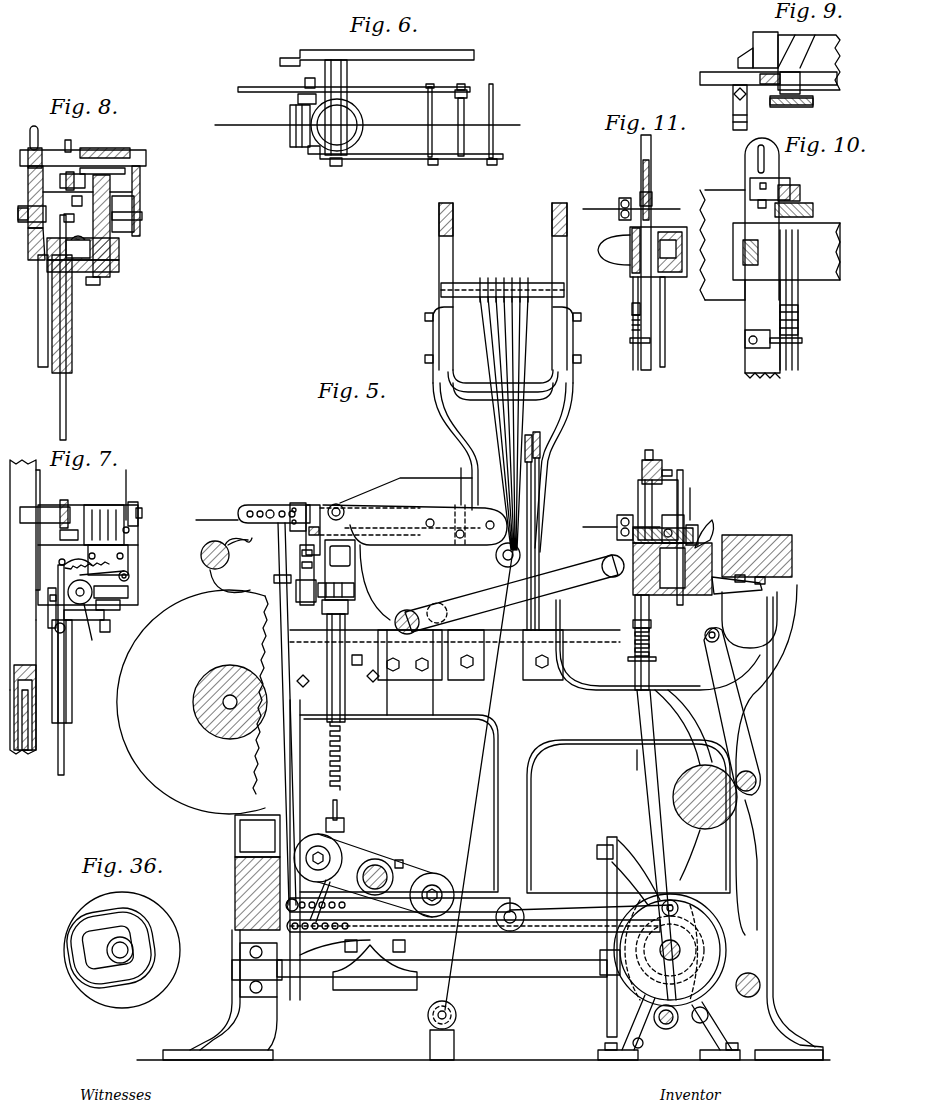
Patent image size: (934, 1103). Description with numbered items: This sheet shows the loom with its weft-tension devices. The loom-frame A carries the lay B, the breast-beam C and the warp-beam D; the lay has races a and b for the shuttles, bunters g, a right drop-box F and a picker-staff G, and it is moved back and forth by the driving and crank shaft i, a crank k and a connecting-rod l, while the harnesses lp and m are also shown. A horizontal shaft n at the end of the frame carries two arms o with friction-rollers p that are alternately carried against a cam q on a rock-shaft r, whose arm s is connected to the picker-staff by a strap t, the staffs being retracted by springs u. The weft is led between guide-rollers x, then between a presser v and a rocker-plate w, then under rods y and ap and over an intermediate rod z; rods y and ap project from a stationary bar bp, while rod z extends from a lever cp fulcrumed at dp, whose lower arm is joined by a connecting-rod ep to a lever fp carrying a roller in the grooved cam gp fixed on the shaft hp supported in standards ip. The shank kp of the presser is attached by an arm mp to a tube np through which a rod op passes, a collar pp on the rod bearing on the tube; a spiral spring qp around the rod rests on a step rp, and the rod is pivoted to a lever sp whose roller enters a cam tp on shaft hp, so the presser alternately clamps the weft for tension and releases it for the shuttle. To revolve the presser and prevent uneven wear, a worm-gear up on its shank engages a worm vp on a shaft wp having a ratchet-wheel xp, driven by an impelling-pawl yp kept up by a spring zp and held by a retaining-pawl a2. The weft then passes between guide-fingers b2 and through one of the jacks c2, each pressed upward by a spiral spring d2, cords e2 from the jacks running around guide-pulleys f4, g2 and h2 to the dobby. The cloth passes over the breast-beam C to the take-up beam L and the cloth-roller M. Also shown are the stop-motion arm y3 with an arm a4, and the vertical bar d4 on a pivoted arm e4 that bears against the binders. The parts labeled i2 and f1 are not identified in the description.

In FIG. 5, the loom-frame A is at (533, 796).
In FIG. 5, the lay B is at (672, 561).
In FIG. 5, the breast-beam C is at (757, 556).
In FIG. 5, the warp-beam D is at (192, 702).
In FIG. 5, the drop-box F is at (687, 536).
In FIG. 5, the picker-staff G is at (628, 769).
In FIG. 5, the cloth-take-up beam L is at (705, 797).
In FIG. 5, the cloth-roller M is at (758, 781).
In FIG. 5, the race a is at (487, 518).
In FIG. 5, the race b is at (415, 520).
In FIG. 5, the bunter g is at (671, 916).
In FIG. 5, the driving and crank shaft i is at (407, 605).
In FIG. 5, the crank k is at (437, 603).
In FIG. 5, the connecting-rod l is at (514, 593).
In FIG. 5, the harness m is at (348, 612).
In FIG. 5, the horizontal shaft n is at (375, 765).
In FIG. 5, the arm o is at (399, 876).
In FIG. 5, the friction-roller p is at (489, 701).
In FIG. 5, the cam q is at (375, 965).
In FIG. 5, the rock-shaft r is at (442, 969).
In FIG. 5, the arm s is at (605, 937).
In FIG. 5, the strap t is at (636, 872).
In FIG. 5, the spring u is at (644, 1043).
In FIG. 8, the presser v is at (142, 178).
In FIG. 7, the presser v is at (130, 528).
In FIG. 5, the presser v is at (318, 500).
In FIG. 8, the rocker-plate w is at (83, 153).
In FIG. 6, the rocker-plate w is at (336, 107).
In FIG. 7, the rocker-plate w is at (104, 515).
In FIG. 5, the rocker-plate w is at (345, 505).
In FIG. 6, the guide-rollers x is at (294, 126).
In FIG. 5, the guide-rollers x is at (300, 500).
In FIG. 6, the rod y is at (423, 120).
In FIG. 5, the rod y is at (433, 527).
In FIG. 8, the rod z is at (76, 200).
In FIG. 6, the rod z is at (455, 120).
In FIG. 5, the rod z is at (455, 514).
In FIG. 6, the rod ap is at (498, 121).
In FIG. 5, the rod ap is at (375, 582).
In FIG. 8, the stationary bar bp is at (142, 198).
In FIG. 6, the stationary bar bp is at (411, 162).
In FIG. 7, the stationary bar bp is at (140, 545).
In FIG. 8, the lever cp is at (72, 152).
In FIG. 6, the lever cp is at (354, 81).
In FIG. 7, the lever cp is at (49, 504).
In FIG. 5, the lever cp is at (253, 505).
In FIG. 8, the fulcrum dp is at (55, 155).
In FIG. 6, the fulcrum dp is at (335, 167).
In FIG. 7, the fulcrum dp is at (140, 512).
In FIG. 5, the fulcrum dp is at (337, 504).
In FIG. 5, the connecting-rod ep is at (291, 714).
In FIG. 5, the lever fp is at (398, 899).
In FIG. 36, the grooved cam gp is at (112, 947).
In FIG. 5, the grooved cam gp is at (705, 920).
In FIG. 5, the horizontal shaft hp is at (678, 949).
In FIG. 5, the standard ip is at (705, 1020).
In FIG. 8, the shank kp is at (122, 222).
In FIG. 7, the shank kp is at (120, 606).
In FIG. 5, the harness lp is at (503, 416).
In FIG. 8, the arm mp is at (118, 264).
In FIG. 7, the arm mp is at (110, 620).
In FIG. 8, the tube np is at (70, 314).
In FIG. 7, the tube np is at (70, 671).
In FIG. 8, the rod op is at (70, 327).
In FIG. 7, the rod op is at (66, 670).
In FIG. 5, the rod op is at (340, 778).
In FIG. 8, the collar pp is at (40, 265).
In FIG. 7, the collar pp is at (48, 600).
In FIG. 5, the spiral spring qp is at (344, 756).
In FIG. 5, the step rp is at (335, 825).
In FIG. 5, the lever sp is at (473, 917).
In FIG. 5, the cam tp is at (659, 950).
In FIG. 8, the worm-gear up is at (112, 245).
In FIG. 7, the worm-gear up is at (124, 593).
In FIG. 5, the worm-gear up is at (354, 588).
In FIG. 6, the worm vp is at (339, 125).
In FIG. 8, the shaft wp is at (90, 282).
In FIG. 7, the shaft wp is at (92, 640).
In FIG. 6, the ratchet-wheel xp is at (298, 98).
In FIG. 5, the ratchet-wheel xp is at (296, 600).
In FIG. 6, the impelling-pawl yp is at (305, 76).
In FIG. 7, the impelling-pawl yp is at (58, 568).
In FIG. 7, the spring zp is at (78, 555).
In FIG. 6, the retaining-pawl a2 is at (310, 155).
In FIG. 7, the retaining-pawl a2 is at (130, 580).
In FIG. 5, the retaining-pawl a2 is at (300, 575).
In FIG. 9, the guide-fingers b2 is at (800, 103).
In FIG. 11, the guide-fingers b2 is at (619, 205).
In FIG. 10, the guide-fingers b2 is at (804, 208).
In FIG. 5, the guide-fingers b2 is at (618, 520).
In FIG. 9, the jack c2 is at (780, 75).
In FIG. 11, the jack c2 is at (652, 205).
In FIG. 10, the jack c2 is at (797, 191).
In FIG. 5, the jack c2 is at (635, 642).
In FIG. 11, the spiral spring d2 is at (630, 318).
In FIG. 10, the spiral spring d2 is at (798, 320).
In FIG. 5, the spiral spring d2 is at (638, 640).
In FIG. 5, the cord e2 is at (560, 665).
In FIG. 5, the guide-pulley h2 is at (501, 555).
In FIG. 8, the pin i2 is at (75, 222).
In FIG. 5, the guide-pulley g2 is at (451, 1030).
In FIG. 5, the arm a4 is at (740, 594).
In FIG. 5, the vertical bar d4 is at (692, 495).
In FIG. 5, the arm e4 is at (700, 525).
In FIG. 5, the stop-motion arm y3 is at (706, 536).
In FIG. 5, the link f1 is at (592, 930).
In FIG. 5, the guide-pulley f4 is at (672, 1019).